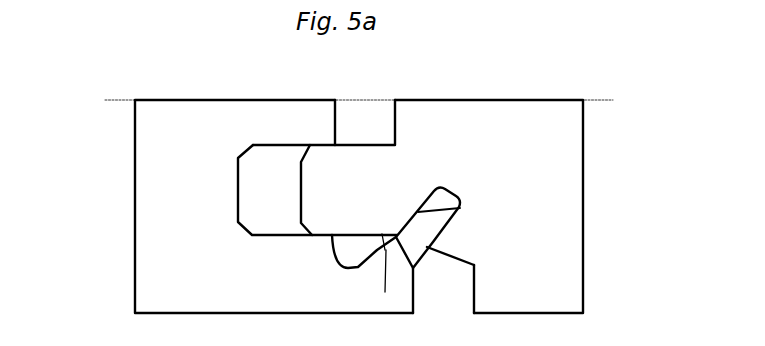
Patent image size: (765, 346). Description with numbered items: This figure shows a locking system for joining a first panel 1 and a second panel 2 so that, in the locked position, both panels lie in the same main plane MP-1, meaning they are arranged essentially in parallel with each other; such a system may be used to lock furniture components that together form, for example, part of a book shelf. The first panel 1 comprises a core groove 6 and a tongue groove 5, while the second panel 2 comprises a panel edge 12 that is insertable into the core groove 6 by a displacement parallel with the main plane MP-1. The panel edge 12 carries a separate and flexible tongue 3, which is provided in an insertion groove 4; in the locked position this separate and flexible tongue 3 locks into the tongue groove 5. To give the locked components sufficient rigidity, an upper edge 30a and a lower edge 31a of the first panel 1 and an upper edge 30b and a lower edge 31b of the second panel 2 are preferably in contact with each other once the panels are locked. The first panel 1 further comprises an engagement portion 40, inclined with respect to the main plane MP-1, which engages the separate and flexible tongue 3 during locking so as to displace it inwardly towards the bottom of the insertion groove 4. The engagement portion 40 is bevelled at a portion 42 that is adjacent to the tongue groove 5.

The first panel 1 is at (122, 172).
The second panel 2 is at (601, 172).
The separate and flexible tongue 3 is at (431, 248).
The insertion groove 4 is at (462, 208).
The tongue groove 5 is at (340, 263).
The core groove 6 is at (242, 193).
The panel edge 12 is at (330, 182).
The upper edge 30a is at (336, 104).
The upper edge 30b is at (398, 104).
The lower edge 31a is at (418, 308).
The lower edge 31b is at (478, 298).
The engagement portion 40 is at (385, 292).
The bevelled portion 42 is at (382, 234).
The main plane MP-1 is at (329, 103).